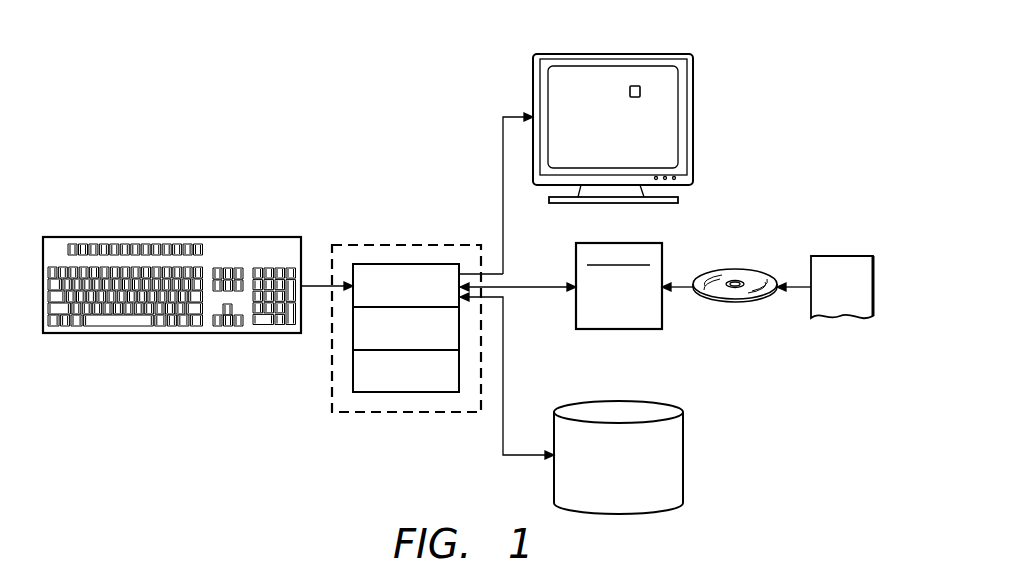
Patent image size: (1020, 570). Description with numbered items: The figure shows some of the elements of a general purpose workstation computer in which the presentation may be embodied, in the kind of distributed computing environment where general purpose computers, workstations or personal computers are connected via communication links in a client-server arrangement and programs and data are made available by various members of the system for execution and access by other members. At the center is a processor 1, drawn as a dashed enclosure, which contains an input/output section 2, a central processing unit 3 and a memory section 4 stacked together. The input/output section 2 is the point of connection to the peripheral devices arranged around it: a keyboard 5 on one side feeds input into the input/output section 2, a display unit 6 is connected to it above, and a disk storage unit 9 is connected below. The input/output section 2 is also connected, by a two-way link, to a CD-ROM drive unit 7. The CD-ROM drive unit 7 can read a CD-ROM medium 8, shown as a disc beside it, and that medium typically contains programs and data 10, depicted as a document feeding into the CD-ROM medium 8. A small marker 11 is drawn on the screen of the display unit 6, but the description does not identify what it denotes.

The processor 1 is at (388, 341).
The input/output section 2 is at (406, 264).
The central processing unit 3 is at (364, 325).
The memory section 4 is at (406, 392).
The keyboard 5 is at (172, 237).
The display unit 6 is at (636, 128).
The CD-ROM drive unit 7 is at (618, 329).
The CD-ROM medium 8 is at (733, 269).
The disk storage unit 9 is at (683, 458).
The programs and data 10 is at (840, 256).
The cursor 11 is at (640, 98).